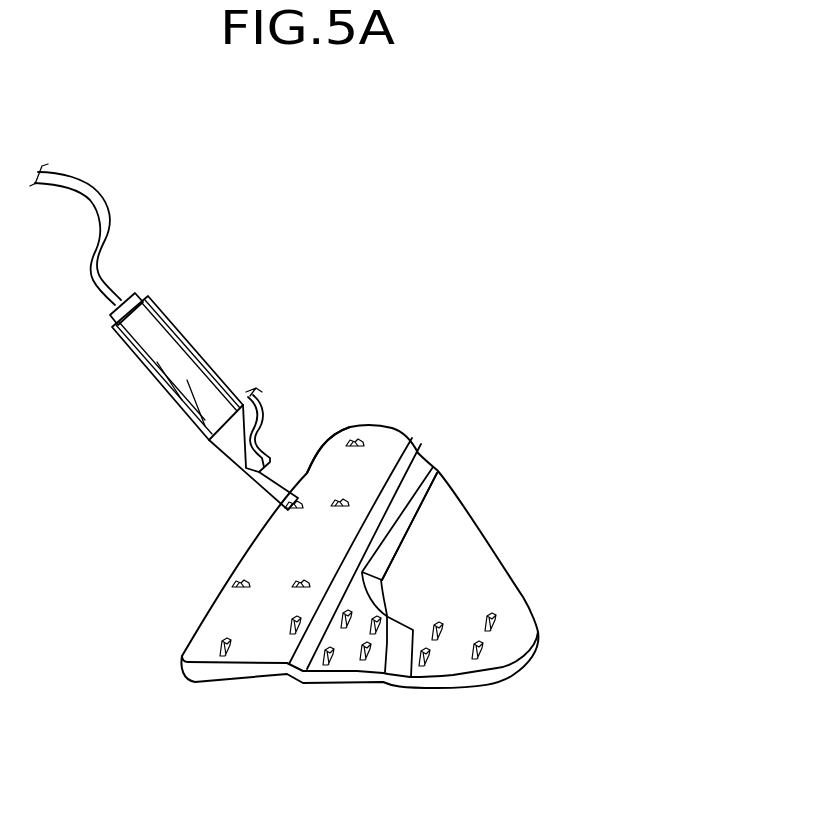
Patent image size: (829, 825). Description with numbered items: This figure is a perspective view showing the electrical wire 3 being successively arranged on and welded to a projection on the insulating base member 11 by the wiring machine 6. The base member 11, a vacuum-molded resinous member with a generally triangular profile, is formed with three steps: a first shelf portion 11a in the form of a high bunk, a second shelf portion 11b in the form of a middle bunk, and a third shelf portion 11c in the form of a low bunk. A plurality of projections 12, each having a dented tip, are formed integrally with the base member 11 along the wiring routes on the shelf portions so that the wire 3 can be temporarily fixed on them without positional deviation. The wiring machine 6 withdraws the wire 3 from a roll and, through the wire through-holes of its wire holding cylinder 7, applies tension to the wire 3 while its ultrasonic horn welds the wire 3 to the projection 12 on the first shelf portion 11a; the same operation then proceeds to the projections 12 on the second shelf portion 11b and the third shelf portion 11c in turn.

The electrical wire 3 is at (316, 468).
The wiring machine 6 is at (182, 328).
The wire holding cylinder 7 is at (228, 453).
The insulating base member 11 is at (486, 537).
The first shelf portion 11a is at (253, 648).
The second shelf portion 11b is at (338, 665).
The third shelf portion 11c is at (483, 583).
The projections 12 is at (351, 443).